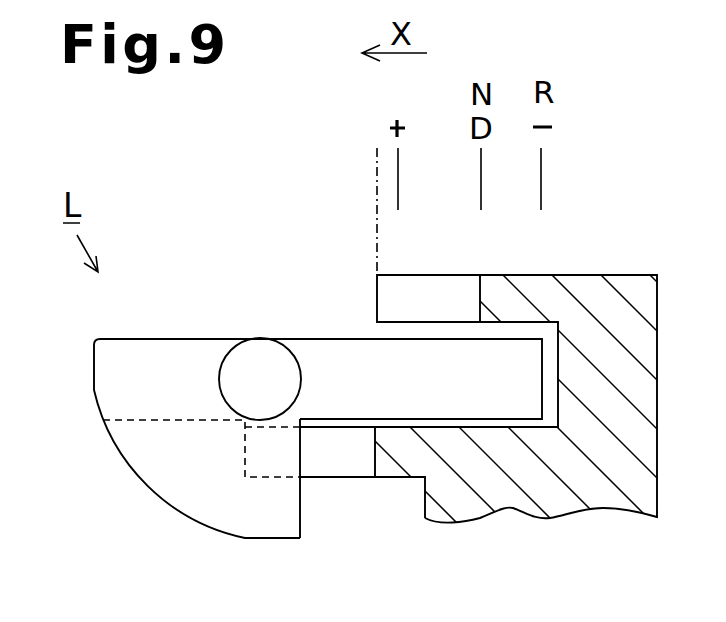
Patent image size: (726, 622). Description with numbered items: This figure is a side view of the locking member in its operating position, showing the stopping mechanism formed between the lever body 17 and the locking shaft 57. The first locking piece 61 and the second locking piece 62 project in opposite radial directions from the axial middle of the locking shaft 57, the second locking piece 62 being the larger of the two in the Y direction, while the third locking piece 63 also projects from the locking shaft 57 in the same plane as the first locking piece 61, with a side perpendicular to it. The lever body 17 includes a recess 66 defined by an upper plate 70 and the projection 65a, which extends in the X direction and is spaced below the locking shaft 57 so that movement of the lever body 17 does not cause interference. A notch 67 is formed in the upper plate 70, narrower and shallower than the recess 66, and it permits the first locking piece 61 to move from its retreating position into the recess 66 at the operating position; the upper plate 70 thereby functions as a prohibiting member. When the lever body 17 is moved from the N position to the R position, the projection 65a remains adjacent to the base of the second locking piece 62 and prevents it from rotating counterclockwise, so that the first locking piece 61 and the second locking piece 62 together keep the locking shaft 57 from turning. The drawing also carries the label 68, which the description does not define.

The lever body 17 is at (630, 288).
The locking shaft 57 is at (258, 358).
The first locking piece 61 is at (328, 362).
The second locking piece 62 is at (130, 420).
The third locking piece 63 is at (255, 522).
The projection 65a is at (342, 462).
The recess 66 is at (566, 392).
The notch 67 is at (478, 280).
The block 68 is at (408, 326).
The upper plate 70 is at (488, 275).